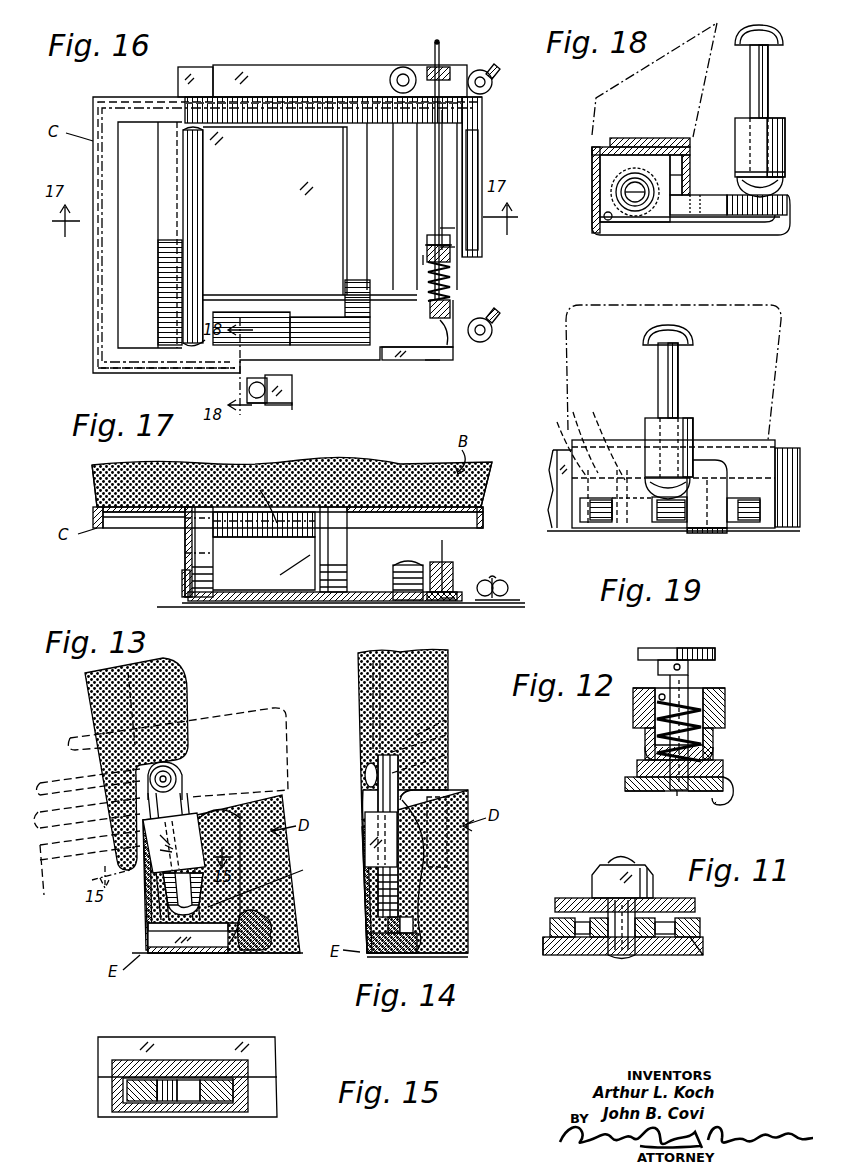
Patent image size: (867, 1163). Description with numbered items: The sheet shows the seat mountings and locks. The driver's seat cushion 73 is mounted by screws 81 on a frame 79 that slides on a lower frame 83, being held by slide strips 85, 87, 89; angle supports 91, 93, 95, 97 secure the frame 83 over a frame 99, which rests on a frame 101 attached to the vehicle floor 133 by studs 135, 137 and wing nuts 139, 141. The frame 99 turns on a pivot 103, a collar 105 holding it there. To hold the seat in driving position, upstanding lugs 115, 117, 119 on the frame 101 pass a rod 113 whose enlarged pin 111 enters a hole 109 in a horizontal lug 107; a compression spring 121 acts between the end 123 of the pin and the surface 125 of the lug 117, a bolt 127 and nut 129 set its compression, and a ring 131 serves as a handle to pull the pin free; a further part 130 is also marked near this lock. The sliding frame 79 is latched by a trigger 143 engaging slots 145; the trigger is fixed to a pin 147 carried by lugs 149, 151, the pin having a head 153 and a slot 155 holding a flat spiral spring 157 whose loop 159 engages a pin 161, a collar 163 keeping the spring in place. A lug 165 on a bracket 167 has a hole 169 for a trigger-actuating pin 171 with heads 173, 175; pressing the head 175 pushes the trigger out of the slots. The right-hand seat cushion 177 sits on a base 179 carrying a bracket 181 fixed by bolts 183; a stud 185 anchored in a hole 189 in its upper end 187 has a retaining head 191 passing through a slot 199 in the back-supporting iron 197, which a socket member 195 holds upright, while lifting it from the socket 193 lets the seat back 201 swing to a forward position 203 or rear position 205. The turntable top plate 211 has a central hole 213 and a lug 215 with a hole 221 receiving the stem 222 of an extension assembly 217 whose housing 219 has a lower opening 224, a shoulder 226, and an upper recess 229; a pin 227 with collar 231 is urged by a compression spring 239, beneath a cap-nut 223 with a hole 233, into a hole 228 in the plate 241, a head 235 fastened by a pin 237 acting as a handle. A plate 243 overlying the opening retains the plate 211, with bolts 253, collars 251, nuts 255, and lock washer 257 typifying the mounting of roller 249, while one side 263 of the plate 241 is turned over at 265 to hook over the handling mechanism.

In FIG. 17, the seat cushion 73 is at (333, 480).
In FIG. 18, the seat cushion 73 is at (705, 98).
In FIG. 19, the seat cushion 73 is at (733, 312).
In FIG. 16, the frame 79 is at (484, 133).
In FIG. 17, the frame 79 is at (484, 510).
In FIG. 18, the frame 79 is at (622, 138).
In FIG. 19, the frame 79 is at (549, 470).
In FIG. 17, the screws 81 is at (97, 494).
In FIG. 16, the lower frame 83 is at (160, 237).
In FIG. 17, the lower frame 83 is at (262, 492).
In FIG. 18, the lower frame 83 is at (592, 150).
In FIG. 19, the lower frame 83 is at (780, 535).
In FIG. 16, the slide strip 85 is at (143, 100).
In FIG. 17, the slide strip 85 is at (140, 520).
In FIG. 16, the slide strip 87 is at (133, 368).
In FIG. 18, the slide strip 89 is at (678, 172).
In FIG. 16, the angle support 91 is at (200, 138).
In FIG. 17, the angle support 91 is at (195, 547).
In FIG. 16, the angle support 93 is at (342, 133).
In FIG. 17, the angle support 93 is at (330, 535).
In FIG. 16, the angle support 95 is at (190, 335).
In FIG. 16, the angle support 97 is at (345, 312).
In FIG. 16, the frame 99 is at (237, 118).
In FIG. 17, the frame 99 is at (182, 582).
In FIG. 16, the frame 101 is at (283, 67).
In FIG. 17, the frame 101 is at (185, 602).
In FIG. 16, the pivot 103 is at (401, 72).
In FIG. 17, the pivot 103 is at (425, 567).
In FIG. 16, the collar 105 is at (397, 76).
In FIG. 17, the collar 105 is at (415, 563).
In FIG. 16, the lug 107 is at (387, 360).
In FIG. 16, the hole 109 is at (427, 363).
In FIG. 16, the pin 111 is at (450, 313).
In FIG. 16, the rod 113 is at (440, 152).
In FIG. 17, the rod 113 is at (447, 570).
In FIG. 16, the upstanding lug 115 is at (447, 348).
In FIG. 16, the upstanding lug 117 is at (457, 267).
In FIG. 16, the upstanding lug 119 is at (445, 72).
In FIG. 17, the upstanding lug 119 is at (455, 573).
In FIG. 16, the compression spring 121 is at (423, 260).
In FIG. 16, the end of pin 123 is at (420, 290).
In FIG. 16, the surface of lug 125 is at (423, 257).
In FIG. 16, the bolt 127 is at (427, 240).
In FIG. 16, the nut 129 is at (453, 247).
In FIG. 16, the collar 130 is at (447, 230).
In FIG. 16, the ring 131 is at (437, 40).
In FIG. 17, the ring 131 is at (445, 603).
In FIG. 17, the floor 133 is at (510, 601).
In FIG. 16, the stud 135 is at (492, 330).
In FIG. 16, the stud 137 is at (493, 83).
In FIG. 17, the stud 137 is at (503, 580).
In FIG. 16, the wing nut 139 is at (498, 312).
In FIG. 16, the wing nut 141 is at (497, 68).
In FIG. 17, the wing nut 141 is at (498, 583).
In FIG. 16, the trigger 143 is at (280, 373).
In FIG. 18, the trigger 143 is at (770, 207).
In FIG. 19, the trigger 143 is at (657, 522).
In FIG. 19, the slots 145 is at (585, 512).
In FIG. 19, the pin 147 is at (618, 445).
In FIG. 19, the lug 149 is at (576, 410).
In FIG. 19, the lug 151 is at (697, 467).
In FIG. 19, the head 153 is at (743, 453).
In FIG. 18, the slot 155 is at (640, 200).
In FIG. 18, the flat spiral spring 157 is at (633, 195).
In FIG. 19, the flat spiral spring 157 is at (615, 525).
In FIG. 18, the loop 159 is at (606, 220).
In FIG. 19, the pin 161 is at (612, 515).
In FIG. 18, the collar 163 is at (655, 200).
In FIG. 19, the collar 163 is at (557, 425).
In FIG. 16, the lug 165 is at (280, 407).
In FIG. 18, the lug 165 is at (775, 135).
In FIG. 19, the lug 165 is at (680, 430).
In FIG. 18, the bracket 167 is at (770, 228).
In FIG. 19, the bracket 167 is at (703, 533).
In FIG. 18, the hole 169 is at (745, 140).
In FIG. 19, the hole 169 is at (655, 440).
In FIG. 18, the trigger-actuating pin 171 is at (766, 70).
In FIG. 19, the trigger-actuating pin 171 is at (675, 360).
In FIG. 18, the head 173 is at (780, 182).
In FIG. 19, the head 173 is at (670, 500).
In FIG. 16, the head 175 is at (258, 403).
In FIG. 18, the head 175 is at (755, 33).
In FIG. 19, the head 175 is at (665, 332).
In FIG. 13, the seat cushion 177 is at (262, 855).
In FIG. 14, the seat cushion 177 is at (450, 845).
In FIG. 13, the base 179 is at (262, 955).
In FIG. 14, the base 179 is at (367, 945).
In FIG. 13, the bracket 181 is at (270, 883).
In FIG. 14, the bracket 181 is at (398, 885).
In FIG. 15, the bracket 181 is at (196, 1060).
In FIG. 13, the bolts 183 is at (228, 950).
In FIG. 14, the bolts 183 is at (402, 925).
In FIG. 14, the stud 185 is at (447, 765).
In FIG. 14, the upper end of bracket 187 is at (447, 742).
In FIG. 14, the surface 189 is at (445, 722).
In FIG. 13, the retaining head 191 is at (177, 772).
In FIG. 14, the retaining head 191 is at (365, 765).
In FIG. 15, the socket 193 is at (250, 1080).
In FIG. 13, the socket member 195 is at (242, 812).
In FIG. 14, the socket member 195 is at (450, 800).
In FIG. 15, the socket member 195 is at (248, 1105).
In FIG. 13, the back-supporting iron 197 is at (155, 873).
In FIG. 14, the back-supporting iron 197 is at (375, 800).
In FIG. 15, the back-supporting iron 197 is at (210, 1103).
In FIG. 13, the slot 199 is at (165, 892).
In FIG. 15, the slot 199 is at (185, 1103).
In FIG. 13, the seat back 201 is at (176, 676).
In FIG. 14, the seat back 201 is at (363, 670).
In FIG. 13, the forward position 203 is at (222, 712).
In FIG. 13, the rear position 205 is at (44, 905).
In FIG. 12, the top plate 211 is at (625, 782).
In FIG. 11, the top plate 211 is at (703, 944).
In FIG. 11, the central hole 213 is at (700, 924).
In FIG. 12, the lug 215 is at (723, 770).
In FIG. 12, the extension assembly 217 is at (720, 700).
In FIG. 12, the housing 219 is at (713, 740).
In FIG. 12, the central hole 221 is at (633, 707).
In FIG. 12, the stem portion 222 is at (645, 752).
In FIG. 12, the cap-nut 223 is at (705, 690).
In FIG. 12, the lower part of opening 224 is at (655, 794).
In FIG. 12, the annular shoulder 226 is at (713, 752).
In FIG. 12, the pin 227 is at (678, 797).
In FIG. 12, the hole 228 is at (675, 794).
In FIG. 12, the upper recess 229 is at (710, 695).
In FIG. 12, the collar 231 is at (645, 737).
In FIG. 12, the hole 233 is at (655, 688).
In FIG. 12, the head 235 is at (698, 648).
In FIG. 12, the fastening pin 237 is at (675, 664).
In FIG. 12, the compression spring 239 is at (715, 715).
In FIG. 12, the plate 241 is at (700, 795).
In FIG. 11, the plate 241 is at (695, 957).
In FIG. 11, the plate 243 is at (697, 905).
In FIG. 11, the roller 249 is at (555, 957).
In FIG. 11, the collar 251 is at (650, 898).
In FIG. 11, the bolt 253 is at (622, 958).
In FIG. 11, the nut 255 is at (600, 868).
In FIG. 11, the lock washer 257 is at (592, 888).
In FIG. 12, the side 263 is at (735, 792).
In FIG. 12, the turned-over portion 265 is at (730, 805).